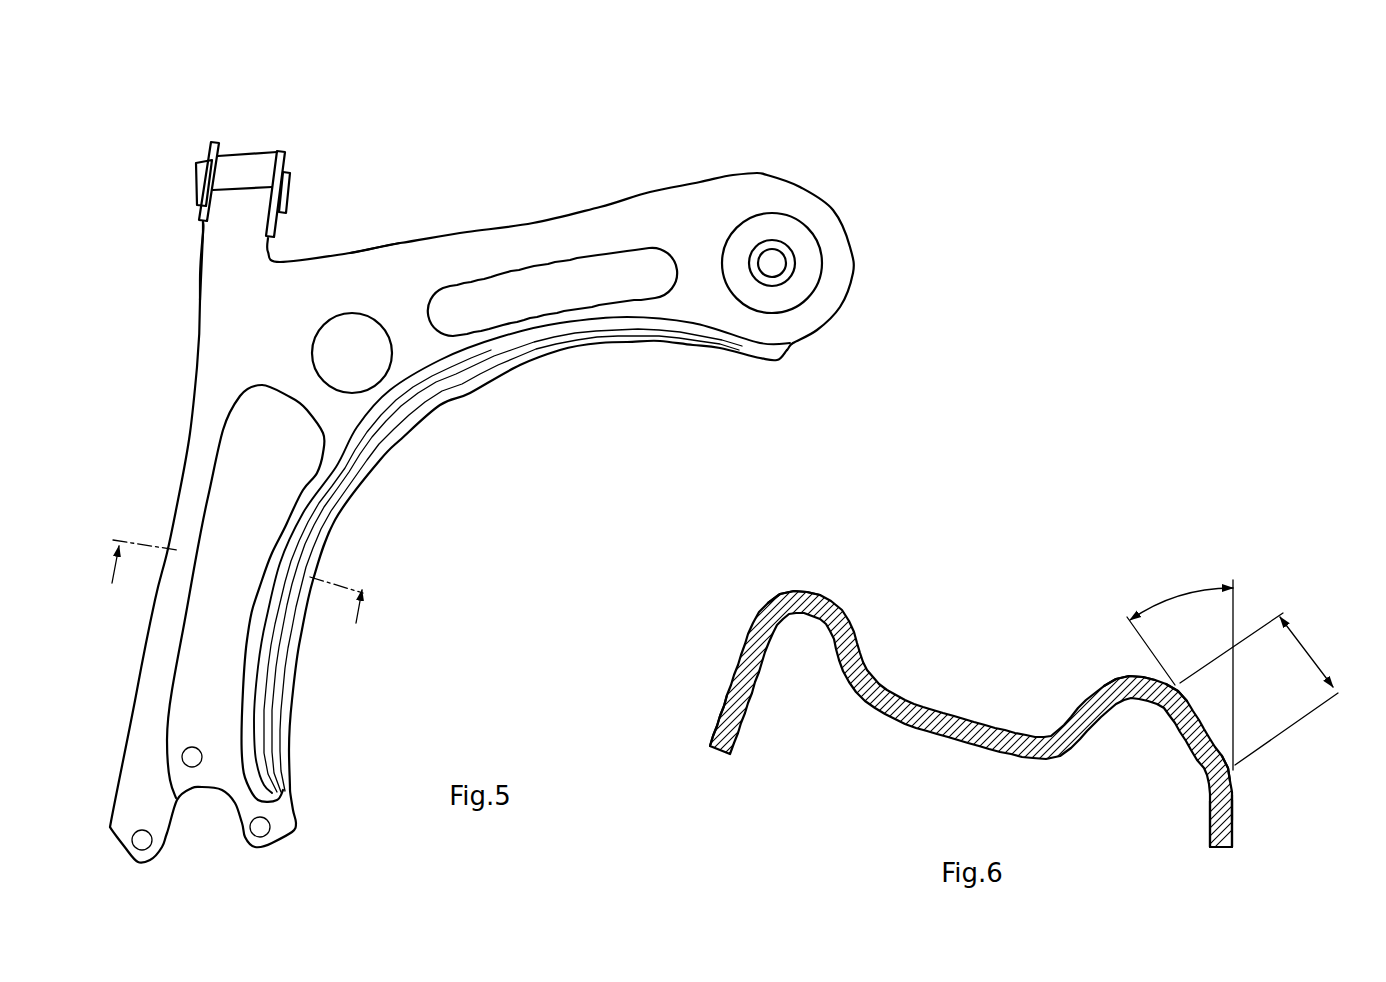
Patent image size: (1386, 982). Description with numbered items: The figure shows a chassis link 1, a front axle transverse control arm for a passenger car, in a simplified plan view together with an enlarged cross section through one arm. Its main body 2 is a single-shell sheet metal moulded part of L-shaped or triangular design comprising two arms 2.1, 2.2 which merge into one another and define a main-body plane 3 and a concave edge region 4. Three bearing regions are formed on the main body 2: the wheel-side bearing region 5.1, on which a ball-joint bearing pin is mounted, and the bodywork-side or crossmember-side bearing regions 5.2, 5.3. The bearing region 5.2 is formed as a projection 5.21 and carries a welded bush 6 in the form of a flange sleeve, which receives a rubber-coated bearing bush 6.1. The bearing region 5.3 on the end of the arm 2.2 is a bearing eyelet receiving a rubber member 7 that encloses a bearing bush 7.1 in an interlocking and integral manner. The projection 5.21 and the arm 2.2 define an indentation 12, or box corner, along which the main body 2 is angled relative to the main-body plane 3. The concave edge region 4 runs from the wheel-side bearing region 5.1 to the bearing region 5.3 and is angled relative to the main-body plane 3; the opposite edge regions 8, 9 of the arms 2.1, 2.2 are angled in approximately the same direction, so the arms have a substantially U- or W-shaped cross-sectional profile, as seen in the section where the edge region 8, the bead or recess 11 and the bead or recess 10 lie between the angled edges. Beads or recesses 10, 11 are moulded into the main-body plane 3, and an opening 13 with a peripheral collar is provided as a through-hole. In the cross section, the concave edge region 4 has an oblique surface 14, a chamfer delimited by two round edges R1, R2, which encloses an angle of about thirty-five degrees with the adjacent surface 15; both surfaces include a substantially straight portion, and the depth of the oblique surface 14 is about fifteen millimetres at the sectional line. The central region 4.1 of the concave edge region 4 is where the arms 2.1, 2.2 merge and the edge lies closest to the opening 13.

In FIG. 5, the chassis link 1 is at (404, 512).
In FIG. 5, the main body 2 is at (400, 293).
In FIG. 5, the arm 2.1 is at (218, 722).
In FIG. 6, the arm 2.1 is at (809, 590).
In FIG. 5, the arm 2.2 is at (705, 303).
In FIG. 5, the main-body plane 3 is at (283, 353).
In FIG. 6, the main-body plane 3 is at (1147, 678).
In FIG. 5, the concave edge region 4 is at (507, 367).
In FIG. 6, the concave edge region 4 is at (1233, 832).
In FIG. 5, the central region 4.1 is at (413, 430).
In FIG. 5, the wheel-side bearing region 5.1 is at (210, 775).
In FIG. 5, the bearing region 5.2 is at (230, 215).
In FIG. 5, the projection 5.21 is at (252, 200).
In FIG. 5, the bearing region 5.3 is at (820, 228).
In FIG. 5, the bush 6 is at (235, 165).
In FIG. 5, the bearing bush 6.1 is at (195, 177).
In FIG. 5, the rubber member 7 is at (748, 245).
In FIG. 5, the bearing bush 7.1 is at (772, 245).
In FIG. 5, the edge region 8 is at (140, 663).
In FIG. 6, the edge region 8 is at (732, 677).
In FIG. 5, the edge region 9 is at (642, 197).
In FIG. 5, the bead or recess 10 is at (547, 287).
In FIG. 5, the bead or recess 11 is at (230, 507).
In FIG. 6, the bead or recess 11 is at (957, 717).
In FIG. 5, the indentation 12 is at (277, 257).
In FIG. 5, the opening 13 is at (348, 330).
In FIG. 6, the oblique surface 14 is at (1207, 723).
In FIG. 6, the surface 15 is at (1233, 807).
In FIG. 6, the radius R1 is at (1177, 685).
In FIG. 6, the radius R2 is at (1233, 772).